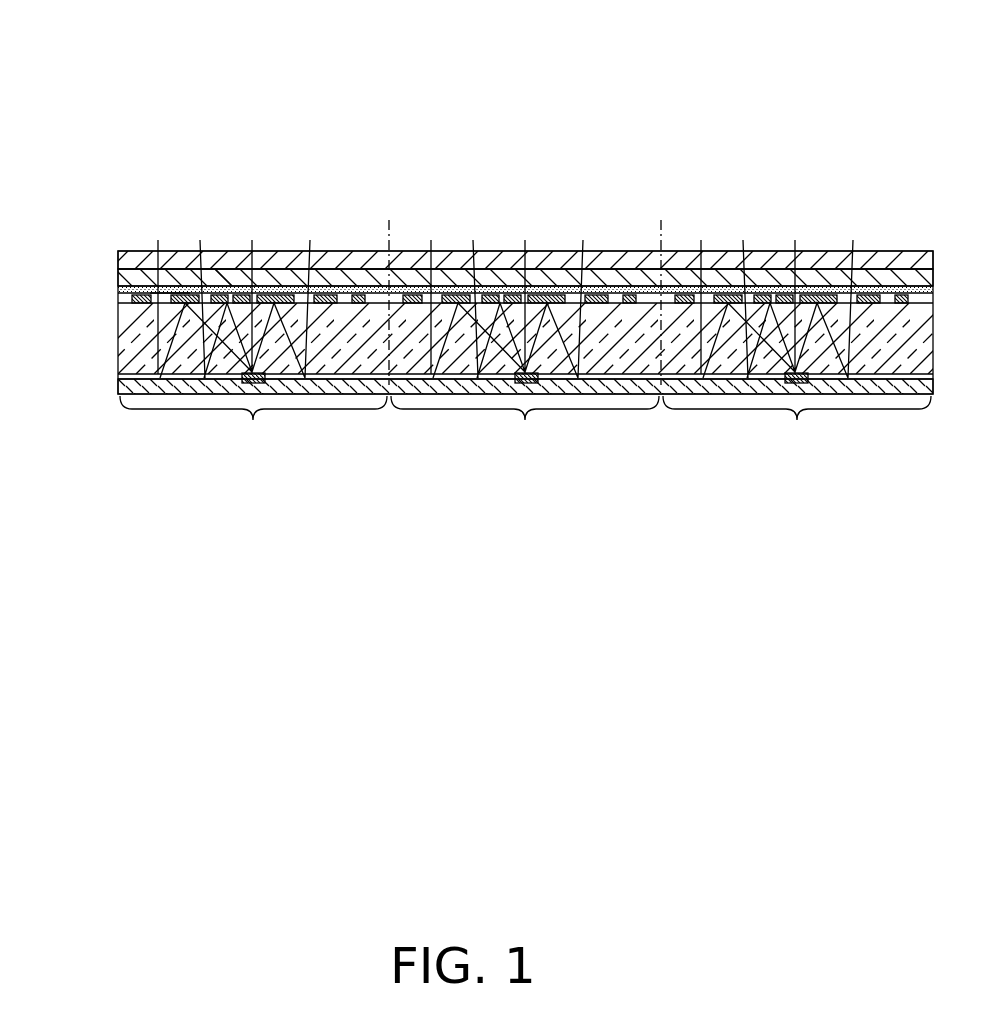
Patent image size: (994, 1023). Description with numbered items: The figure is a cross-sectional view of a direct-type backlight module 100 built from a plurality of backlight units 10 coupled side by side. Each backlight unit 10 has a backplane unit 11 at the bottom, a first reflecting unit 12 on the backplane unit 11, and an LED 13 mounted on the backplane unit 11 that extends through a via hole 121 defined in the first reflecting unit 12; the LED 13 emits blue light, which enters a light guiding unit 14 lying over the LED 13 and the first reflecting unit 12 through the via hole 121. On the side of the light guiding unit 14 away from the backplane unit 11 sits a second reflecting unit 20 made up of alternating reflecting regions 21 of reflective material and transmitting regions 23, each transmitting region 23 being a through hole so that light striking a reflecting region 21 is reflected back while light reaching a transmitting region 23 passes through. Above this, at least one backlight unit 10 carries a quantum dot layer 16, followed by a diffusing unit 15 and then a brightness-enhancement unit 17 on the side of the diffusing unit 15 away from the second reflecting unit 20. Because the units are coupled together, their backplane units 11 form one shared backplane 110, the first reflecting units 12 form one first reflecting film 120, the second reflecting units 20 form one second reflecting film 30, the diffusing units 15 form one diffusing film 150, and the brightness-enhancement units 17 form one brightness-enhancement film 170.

The backlight module 100 is at (448, 46).
The backlight unit 10 is at (525, 340).
The backplane unit 11 is at (125, 388).
The backplane 110 is at (481, 410).
The first reflecting unit 12 is at (138, 374).
The first reflecting film 120 is at (476, 356).
The via hole 121 is at (328, 302).
The LED 13 is at (287, 300).
The light guiding unit 14 is at (421, 320).
The diffusing unit 15 is at (118, 274).
The diffusing film 150 is at (478, 234).
The quantum dot layer 16 is at (373, 284).
The brightness-enhancement unit 17 is at (141, 257).
The brightness-enhancement film 170 is at (487, 224).
The second reflecting unit 20 is at (482, 272).
The second reflecting film 30 is at (482, 272).
The reflecting region 21 is at (229, 286).
The transmitting region 23 is at (166, 292).